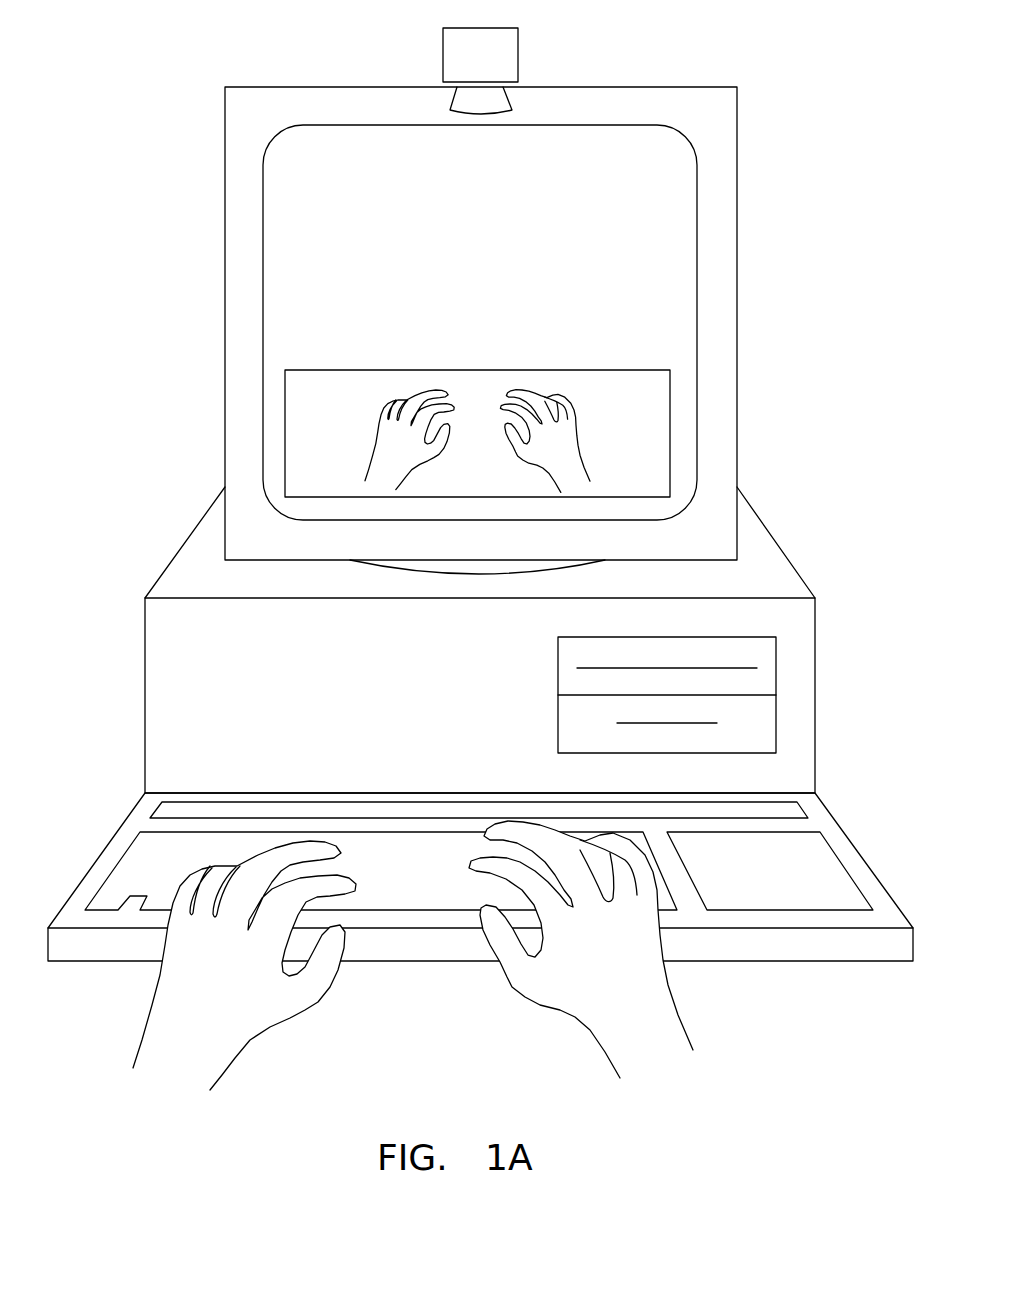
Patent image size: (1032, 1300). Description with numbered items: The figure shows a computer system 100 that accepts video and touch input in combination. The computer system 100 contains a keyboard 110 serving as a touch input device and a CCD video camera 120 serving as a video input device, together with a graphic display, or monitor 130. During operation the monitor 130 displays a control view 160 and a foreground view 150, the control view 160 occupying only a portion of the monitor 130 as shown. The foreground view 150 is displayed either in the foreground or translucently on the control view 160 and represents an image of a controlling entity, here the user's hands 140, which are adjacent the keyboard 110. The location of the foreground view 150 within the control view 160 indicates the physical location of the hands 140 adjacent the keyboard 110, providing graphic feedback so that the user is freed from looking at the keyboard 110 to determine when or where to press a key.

The computer system 100 is at (490, 559).
The keyboard 110 is at (849, 842).
The CCD video camera 120 is at (518, 50).
The monitor 130 is at (225, 233).
The user's hands 140 is at (510, 982).
The foreground view 150 is at (498, 400).
The control view 160 is at (337, 370).